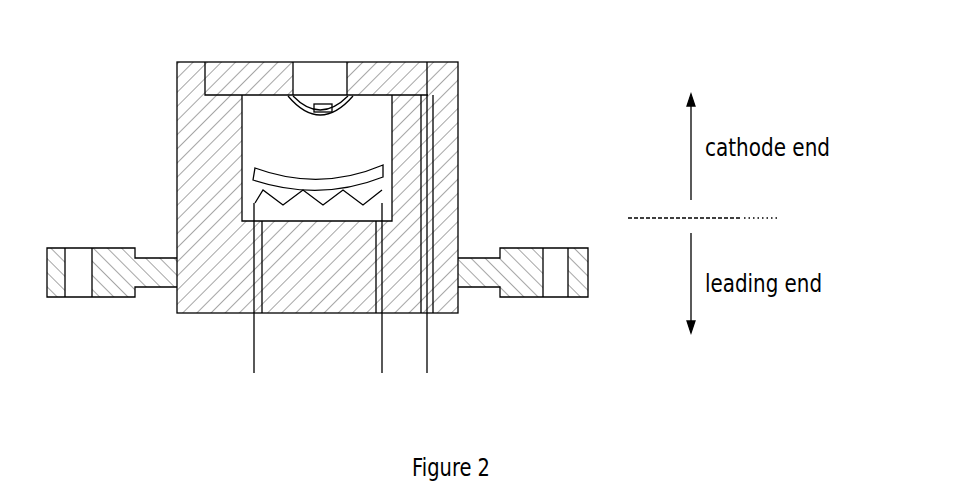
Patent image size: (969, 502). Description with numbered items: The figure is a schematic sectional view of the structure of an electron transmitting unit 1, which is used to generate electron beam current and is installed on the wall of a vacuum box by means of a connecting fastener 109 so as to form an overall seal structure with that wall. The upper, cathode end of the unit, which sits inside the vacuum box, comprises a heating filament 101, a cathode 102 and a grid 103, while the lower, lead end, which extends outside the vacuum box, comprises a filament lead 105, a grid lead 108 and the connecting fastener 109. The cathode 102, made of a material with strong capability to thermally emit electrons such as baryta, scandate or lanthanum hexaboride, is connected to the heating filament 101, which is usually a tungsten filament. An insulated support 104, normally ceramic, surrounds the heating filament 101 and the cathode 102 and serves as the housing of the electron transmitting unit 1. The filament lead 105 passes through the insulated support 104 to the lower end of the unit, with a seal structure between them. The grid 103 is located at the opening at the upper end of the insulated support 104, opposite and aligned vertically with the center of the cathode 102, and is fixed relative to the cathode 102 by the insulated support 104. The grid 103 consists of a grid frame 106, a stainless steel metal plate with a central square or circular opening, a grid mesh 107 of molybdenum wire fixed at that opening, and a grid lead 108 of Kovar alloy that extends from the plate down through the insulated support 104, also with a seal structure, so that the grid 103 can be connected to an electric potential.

The electron transmitting unit 1 is at (522, 54).
The heating filament 101 is at (393, 192).
The cathode 102 is at (388, 166).
The grid 103 is at (352, 96).
The insulated support 104 is at (190, 162).
The filament lead 105 is at (255, 333).
The grid frame 106 is at (252, 76).
The grid mesh 107 is at (303, 110).
The grid lead 108 is at (428, 333).
The connecting fastener 109 is at (130, 257).